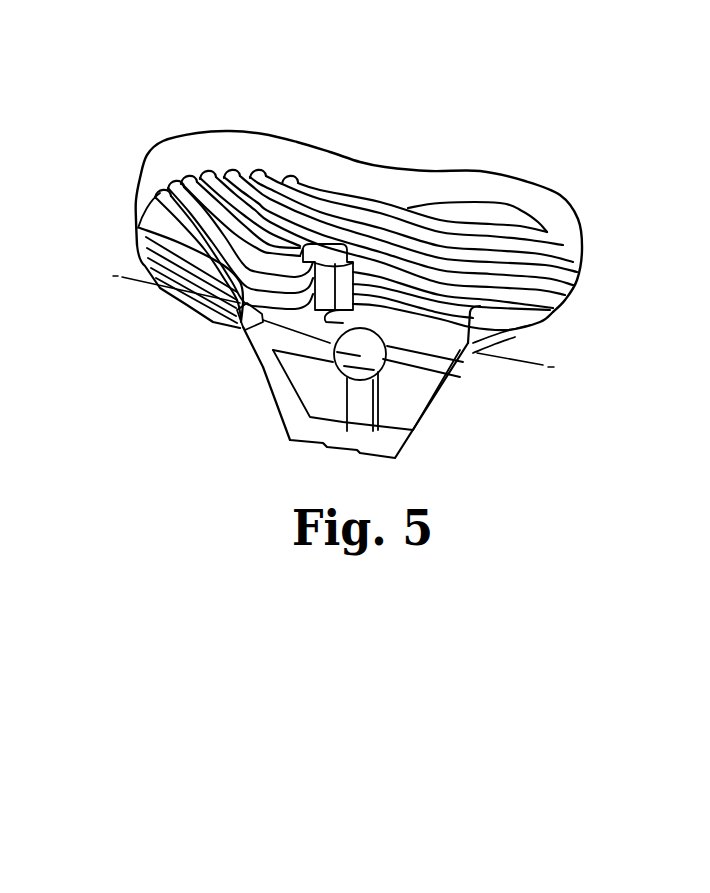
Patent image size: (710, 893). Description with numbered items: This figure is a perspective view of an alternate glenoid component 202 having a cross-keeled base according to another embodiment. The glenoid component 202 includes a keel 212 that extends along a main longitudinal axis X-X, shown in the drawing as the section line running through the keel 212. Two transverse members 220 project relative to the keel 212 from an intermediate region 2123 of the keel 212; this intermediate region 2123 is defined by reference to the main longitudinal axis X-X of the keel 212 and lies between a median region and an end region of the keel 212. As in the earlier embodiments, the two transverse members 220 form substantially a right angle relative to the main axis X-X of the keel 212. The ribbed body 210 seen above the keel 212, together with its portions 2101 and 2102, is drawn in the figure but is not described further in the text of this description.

The glenoid component 202 is at (463, 107).
The ribbed pad 210 is at (543, 208).
The first ribbed portion 2101 is at (225, 195).
The second ribbed portion 2102 is at (580, 295).
The transverse members 220 is at (327, 293).
The keel 212 is at (437, 405).
The intermediate region 2123 is at (200, 334).